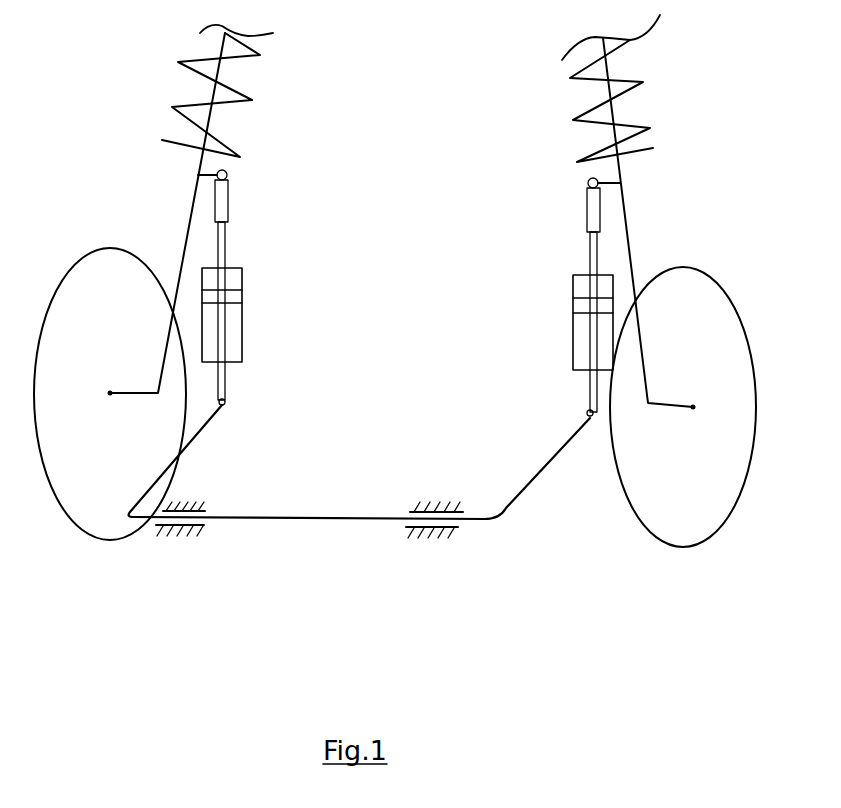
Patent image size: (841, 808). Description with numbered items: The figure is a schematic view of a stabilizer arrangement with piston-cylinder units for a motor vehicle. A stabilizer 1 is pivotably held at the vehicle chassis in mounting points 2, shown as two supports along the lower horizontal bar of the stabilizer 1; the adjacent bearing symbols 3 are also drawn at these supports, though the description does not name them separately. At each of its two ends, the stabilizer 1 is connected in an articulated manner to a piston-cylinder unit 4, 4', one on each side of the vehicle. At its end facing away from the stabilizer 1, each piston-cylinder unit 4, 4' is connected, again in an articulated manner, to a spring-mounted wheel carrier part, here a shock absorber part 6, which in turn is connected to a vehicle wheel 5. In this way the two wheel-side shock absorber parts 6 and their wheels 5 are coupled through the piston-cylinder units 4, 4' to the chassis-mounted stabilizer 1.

The stabilizer 1 is at (257, 519).
The mounting points 2 is at (175, 547).
The bearing 3 is at (181, 502).
The piston-cylinder unit 4 is at (570, 215).
The piston-cylinder unit 4' is at (248, 215).
The vehicle wheel 5 is at (78, 495).
The shock absorber part 6 is at (187, 235).